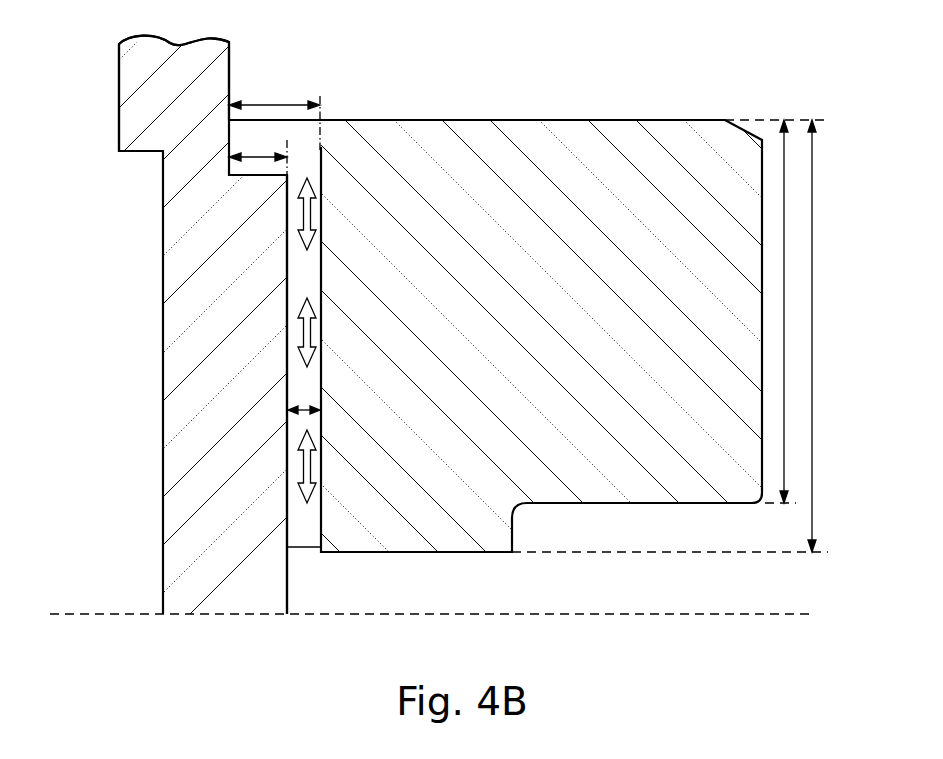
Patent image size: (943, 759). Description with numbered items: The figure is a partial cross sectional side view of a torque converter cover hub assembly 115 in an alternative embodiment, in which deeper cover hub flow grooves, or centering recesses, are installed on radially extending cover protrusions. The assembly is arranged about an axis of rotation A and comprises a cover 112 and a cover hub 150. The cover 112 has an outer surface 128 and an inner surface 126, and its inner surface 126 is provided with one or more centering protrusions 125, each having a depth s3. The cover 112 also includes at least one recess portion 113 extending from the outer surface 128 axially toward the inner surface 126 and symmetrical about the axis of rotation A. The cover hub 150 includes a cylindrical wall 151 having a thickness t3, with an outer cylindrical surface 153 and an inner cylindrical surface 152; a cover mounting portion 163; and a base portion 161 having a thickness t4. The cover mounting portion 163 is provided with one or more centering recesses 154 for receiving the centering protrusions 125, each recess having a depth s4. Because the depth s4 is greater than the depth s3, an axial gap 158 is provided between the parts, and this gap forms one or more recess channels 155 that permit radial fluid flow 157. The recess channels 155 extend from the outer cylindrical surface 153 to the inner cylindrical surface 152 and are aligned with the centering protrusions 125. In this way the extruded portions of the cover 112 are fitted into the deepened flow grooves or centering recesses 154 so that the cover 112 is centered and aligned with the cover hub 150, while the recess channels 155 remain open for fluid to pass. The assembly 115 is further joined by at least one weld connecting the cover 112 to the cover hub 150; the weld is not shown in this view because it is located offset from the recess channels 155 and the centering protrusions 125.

The recess portion 113 is at (163, 508).
The outer surface 128 is at (119, 97).
The cover hub assembly 115 is at (115, 256).
The cover 112 is at (240, 267).
The inner surface 126 is at (287, 512).
The cover hub 150 is at (565, 322).
The centering recess 154 is at (321, 147).
The centering protrusion 125 is at (273, 270).
The cover mounting portion 163 is at (380, 268).
The outer cylindrical surface 153 is at (535, 121).
The cylindrical wall 151 is at (448, 325).
The base portion 161 is at (651, 418).
The inner cylindrical surface 152 is at (435, 552).
The radial fluid flow 157 is at (320, 338).
The gap 158 is at (303, 407).
The recess channel 155 is at (305, 297).
The depth of centering recess s4 is at (274, 95).
The depth of centering protrusion s3 is at (258, 156).
The thickness of base portion t4 is at (794, 311).
The thickness of cylindrical wall t3 is at (822, 336).
The axis of rotation A is at (762, 616).